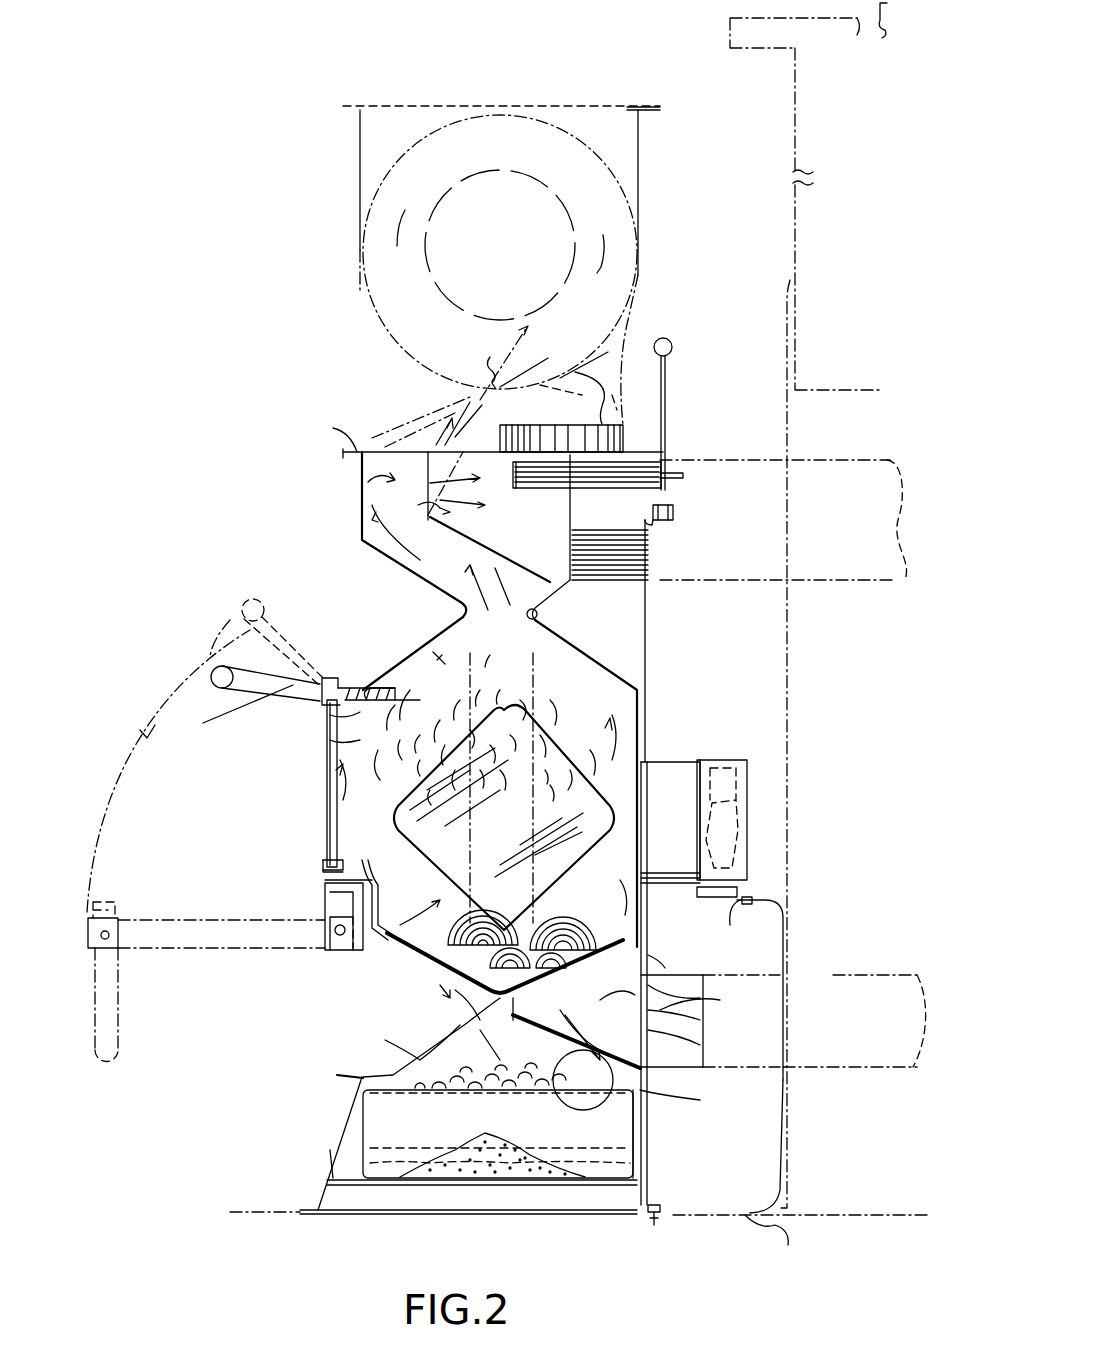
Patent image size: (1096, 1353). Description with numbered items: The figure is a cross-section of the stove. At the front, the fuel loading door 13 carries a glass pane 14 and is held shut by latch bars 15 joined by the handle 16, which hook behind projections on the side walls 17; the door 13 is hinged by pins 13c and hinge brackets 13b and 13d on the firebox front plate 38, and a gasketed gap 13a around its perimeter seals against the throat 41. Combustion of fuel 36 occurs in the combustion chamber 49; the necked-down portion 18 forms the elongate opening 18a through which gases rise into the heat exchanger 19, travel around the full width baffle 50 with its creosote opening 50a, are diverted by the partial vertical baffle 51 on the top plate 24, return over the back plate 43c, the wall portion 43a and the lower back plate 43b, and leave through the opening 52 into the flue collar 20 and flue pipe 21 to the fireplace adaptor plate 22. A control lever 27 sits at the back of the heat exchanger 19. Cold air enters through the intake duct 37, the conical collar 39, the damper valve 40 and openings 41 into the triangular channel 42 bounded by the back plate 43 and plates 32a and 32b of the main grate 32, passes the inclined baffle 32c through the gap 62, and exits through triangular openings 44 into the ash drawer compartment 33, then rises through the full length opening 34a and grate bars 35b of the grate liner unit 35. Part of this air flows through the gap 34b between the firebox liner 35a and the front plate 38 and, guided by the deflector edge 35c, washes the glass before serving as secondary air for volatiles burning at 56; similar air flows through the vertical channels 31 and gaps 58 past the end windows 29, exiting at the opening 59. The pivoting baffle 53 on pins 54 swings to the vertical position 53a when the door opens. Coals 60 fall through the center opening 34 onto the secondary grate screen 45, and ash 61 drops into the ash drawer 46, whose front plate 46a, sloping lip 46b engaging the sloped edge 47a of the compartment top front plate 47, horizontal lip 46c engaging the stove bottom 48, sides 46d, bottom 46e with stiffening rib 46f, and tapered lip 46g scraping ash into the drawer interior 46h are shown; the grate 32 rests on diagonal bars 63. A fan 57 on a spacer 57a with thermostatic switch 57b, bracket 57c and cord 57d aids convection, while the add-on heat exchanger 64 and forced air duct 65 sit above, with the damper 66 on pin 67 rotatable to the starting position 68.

The fuel loading door 13 is at (320, 708).
The gap around doorframe perimeter 13a is at (335, 676).
The door hinge bracket 13b is at (325, 928).
The hinge pins 13c is at (330, 945).
The hinge bracket 13d is at (338, 955).
The glass pane 14 is at (325, 770).
The latch bars 15 is at (256, 710).
The handle 16 is at (211, 677).
The side walls 17 is at (643, 780).
The necked-down portion 18 is at (440, 628).
The elongate narrow opening 18a is at (538, 615).
The heat exchanger 19 is at (336, 504).
The flue collar 20 is at (664, 587).
The flue pipe 21 is at (746, 458).
The fireplace adaptor plate 22 is at (795, 770).
The top plate 24 is at (410, 108).
The control lever 27 is at (670, 347).
The end windows 29 is at (560, 762).
The vertical channels 31 is at (534, 676).
The main grate 32 is at (624, 885).
The main grate rear plate 32a is at (690, 1008).
The combustion air distribution plate 32b is at (648, 1062).
The baffle 32c is at (690, 1043).
The ash drawer compartment 33 is at (655, 1137).
The center opening 34 is at (451, 1033).
The full length opening 34a is at (470, 1019).
The gap 34b is at (428, 976).
The grate liner unit 35 is at (416, 914).
The firebox liner 35a is at (385, 892).
The grate bars 35b is at (613, 916).
The deflector edge 35c is at (364, 870).
The fuel 36 is at (490, 880).
The intake duct 37 is at (848, 975).
The firebox front plate 38 is at (370, 963).
The conical collar 39 is at (325, 880).
The damper valve 40 is at (648, 1090).
The openings 41 is at (348, 688).
The triangular channel 42 is at (700, 965).
The back plate 43 is at (650, 912).
The liner side wall 43a is at (580, 642).
The lower back plate 43b is at (568, 585).
The back plate of heat exchanger 43c is at (673, 541).
The triangular openings 44 is at (576, 1108).
The secondary grate screen 45 is at (412, 1095).
The ash drawer 46 is at (348, 1131).
The drawer front plate 46a is at (355, 1112).
The sloping upper lip and pull-out handle 46b is at (332, 1078).
The horizontally projecting lip 46c is at (325, 1170).
The drawer sides 46d is at (640, 1148).
The drawer bottom 46e is at (495, 1188).
The stiffening rib 46f is at (600, 1188).
The tapered ash entrance lip 46g is at (654, 1218).
The drawer interior 46h is at (338, 1140).
The compartment top front plate 47 is at (410, 1057).
The sloped edge 47a is at (342, 1070).
The stove bottom 48 is at (395, 1214).
The combustion chamber 49 is at (393, 824).
The full width baffle 50 is at (488, 513).
The small opening 50a is at (586, 517).
The partial vertical baffle 51 is at (420, 505).
The opening 52 is at (566, 522).
The full width baffle 53 is at (395, 700).
The vertical position of baffle 53a is at (480, 747).
The pins 54 is at (416, 648).
The combustion of volatiles 56 is at (488, 780).
The fan 57 is at (733, 760).
The spacer 57a is at (670, 762).
The thermostatic switch 57b is at (730, 915).
The bracket 57c is at (688, 893).
The cord 57d is at (790, 935).
The gap 58 is at (569, 832).
The opening 59 is at (501, 777).
The coals 60 is at (490, 1067).
The ash 61 is at (471, 1140).
The gap 62 is at (770, 1030).
The bars 63 is at (618, 1108).
The add-on heat exchanger 64 is at (642, 137).
The forced air connection duct 65 is at (498, 249).
The damper 66 is at (525, 328).
The pin 67 is at (526, 385).
The damper starting position 68 is at (414, 416).